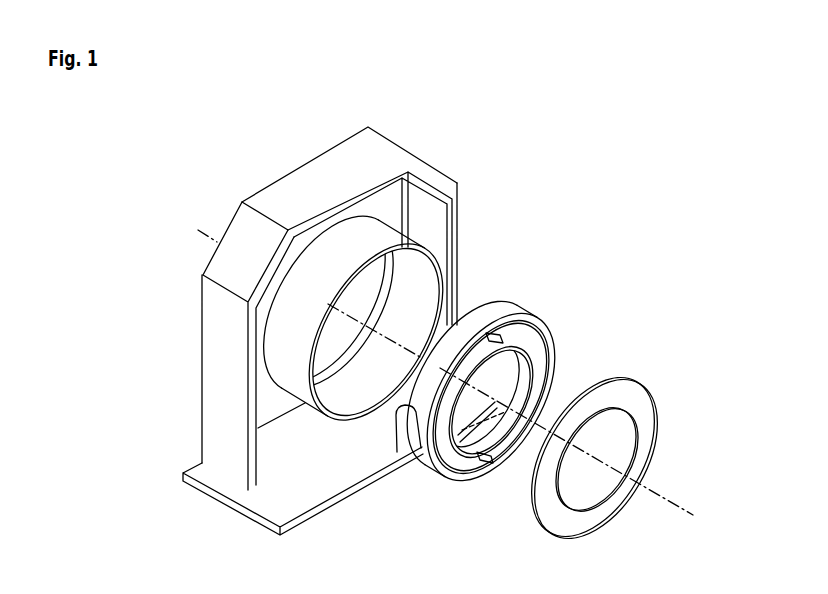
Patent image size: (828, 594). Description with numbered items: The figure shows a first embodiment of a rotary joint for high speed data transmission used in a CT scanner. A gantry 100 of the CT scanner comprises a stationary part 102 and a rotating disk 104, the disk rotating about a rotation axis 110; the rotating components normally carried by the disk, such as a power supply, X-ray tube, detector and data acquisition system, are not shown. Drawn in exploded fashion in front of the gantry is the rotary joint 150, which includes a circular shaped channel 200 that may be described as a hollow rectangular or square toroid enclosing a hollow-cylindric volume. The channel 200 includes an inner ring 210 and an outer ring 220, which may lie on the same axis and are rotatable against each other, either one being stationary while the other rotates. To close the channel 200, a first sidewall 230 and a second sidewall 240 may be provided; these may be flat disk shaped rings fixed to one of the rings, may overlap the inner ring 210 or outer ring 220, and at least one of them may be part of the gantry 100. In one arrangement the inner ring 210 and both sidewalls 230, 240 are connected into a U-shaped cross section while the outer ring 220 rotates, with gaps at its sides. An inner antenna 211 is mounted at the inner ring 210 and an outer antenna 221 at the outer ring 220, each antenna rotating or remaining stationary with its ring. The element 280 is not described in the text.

The gantry 100 is at (370, 326).
The stationary part 102 is at (430, 165).
The rotating disk 104 is at (325, 250).
The rotation axis 110 is at (668, 500).
The rotary joint 150 is at (531, 383).
The circular shaped channel 200 is at (524, 397).
The inner ring 210 is at (523, 387).
The inner antenna 211 is at (492, 336).
The outer ring 220 is at (507, 317).
The outer antenna 221 is at (483, 463).
The first sidewall 230 is at (406, 406).
The second sidewall 240 is at (633, 380).
The slot 280 is at (500, 420).